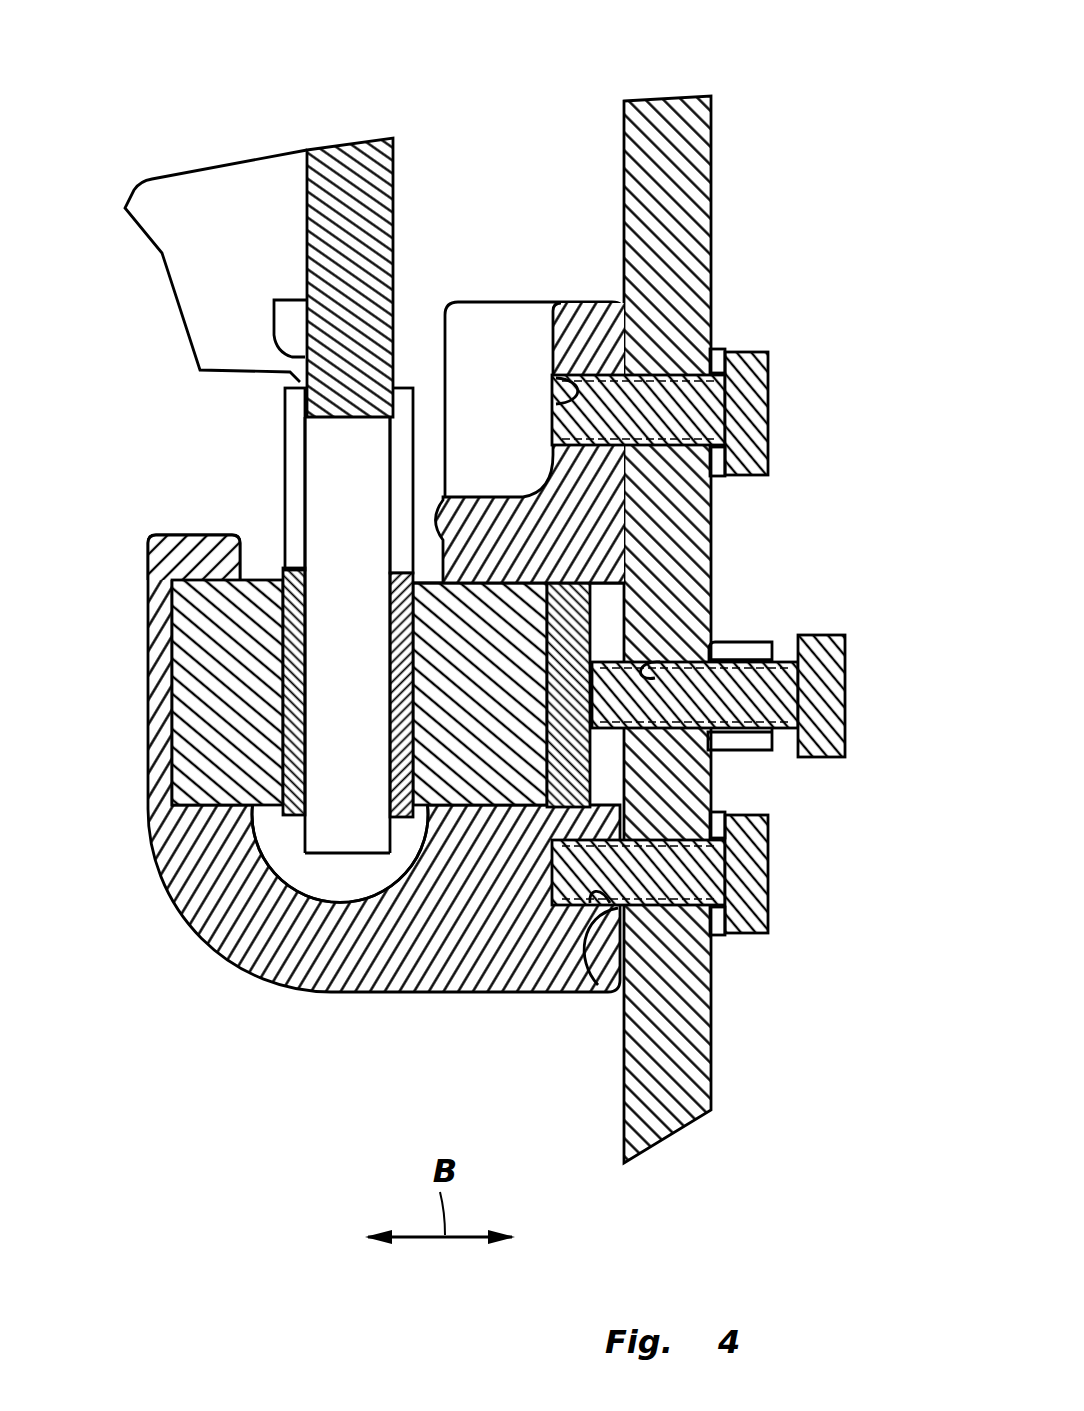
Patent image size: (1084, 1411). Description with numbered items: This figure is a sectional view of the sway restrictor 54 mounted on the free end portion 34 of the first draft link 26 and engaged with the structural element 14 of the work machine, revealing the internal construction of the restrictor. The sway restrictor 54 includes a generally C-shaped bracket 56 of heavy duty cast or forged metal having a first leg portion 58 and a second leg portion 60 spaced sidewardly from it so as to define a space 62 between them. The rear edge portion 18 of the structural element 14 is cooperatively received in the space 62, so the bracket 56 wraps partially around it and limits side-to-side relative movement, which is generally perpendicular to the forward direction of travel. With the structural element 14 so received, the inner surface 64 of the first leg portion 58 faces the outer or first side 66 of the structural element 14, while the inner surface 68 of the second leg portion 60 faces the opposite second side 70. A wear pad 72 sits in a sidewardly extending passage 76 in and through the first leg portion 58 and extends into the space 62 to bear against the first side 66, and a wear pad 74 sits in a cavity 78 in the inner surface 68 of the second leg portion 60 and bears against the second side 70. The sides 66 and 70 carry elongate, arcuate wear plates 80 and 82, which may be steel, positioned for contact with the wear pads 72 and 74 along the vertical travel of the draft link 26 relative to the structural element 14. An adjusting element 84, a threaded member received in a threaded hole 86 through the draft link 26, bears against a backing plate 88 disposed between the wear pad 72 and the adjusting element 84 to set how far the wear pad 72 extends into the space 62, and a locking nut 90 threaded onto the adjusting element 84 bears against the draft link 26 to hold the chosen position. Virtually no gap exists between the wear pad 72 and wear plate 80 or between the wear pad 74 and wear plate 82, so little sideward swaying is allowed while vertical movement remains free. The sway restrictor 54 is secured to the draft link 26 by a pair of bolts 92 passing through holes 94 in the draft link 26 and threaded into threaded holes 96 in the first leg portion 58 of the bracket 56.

The structural element 14 is at (352, 125).
The rear edge portion 18 is at (330, 857).
The first draft link 26 is at (752, 629).
The free end portion 34 is at (712, 1073).
The sway restrictor 54 is at (338, 860).
The bracket 56 is at (338, 810).
The first leg portion 58 is at (518, 391).
The second leg portion 60 is at (150, 828).
The space 62 is at (277, 840).
The inner surface 64 is at (445, 502).
The first side 66 is at (390, 479).
The inner surface 68 is at (250, 548).
The second side 70 is at (292, 538).
The wear pad 72 is at (486, 808).
The wear pad 74 is at (160, 471).
The passage 76 is at (610, 788).
The cavity 78 is at (210, 790).
The wear plate 80 is at (404, 385).
The wear plate 82 is at (293, 385).
The adjusting element 84 is at (769, 666).
The threaded hole 86 is at (640, 668).
The backing plate 88 is at (593, 765).
The locking nut 90 is at (750, 636).
The bolts 92 is at (714, 631).
The holes 94 is at (690, 405).
The threaded holes 96 is at (552, 408).